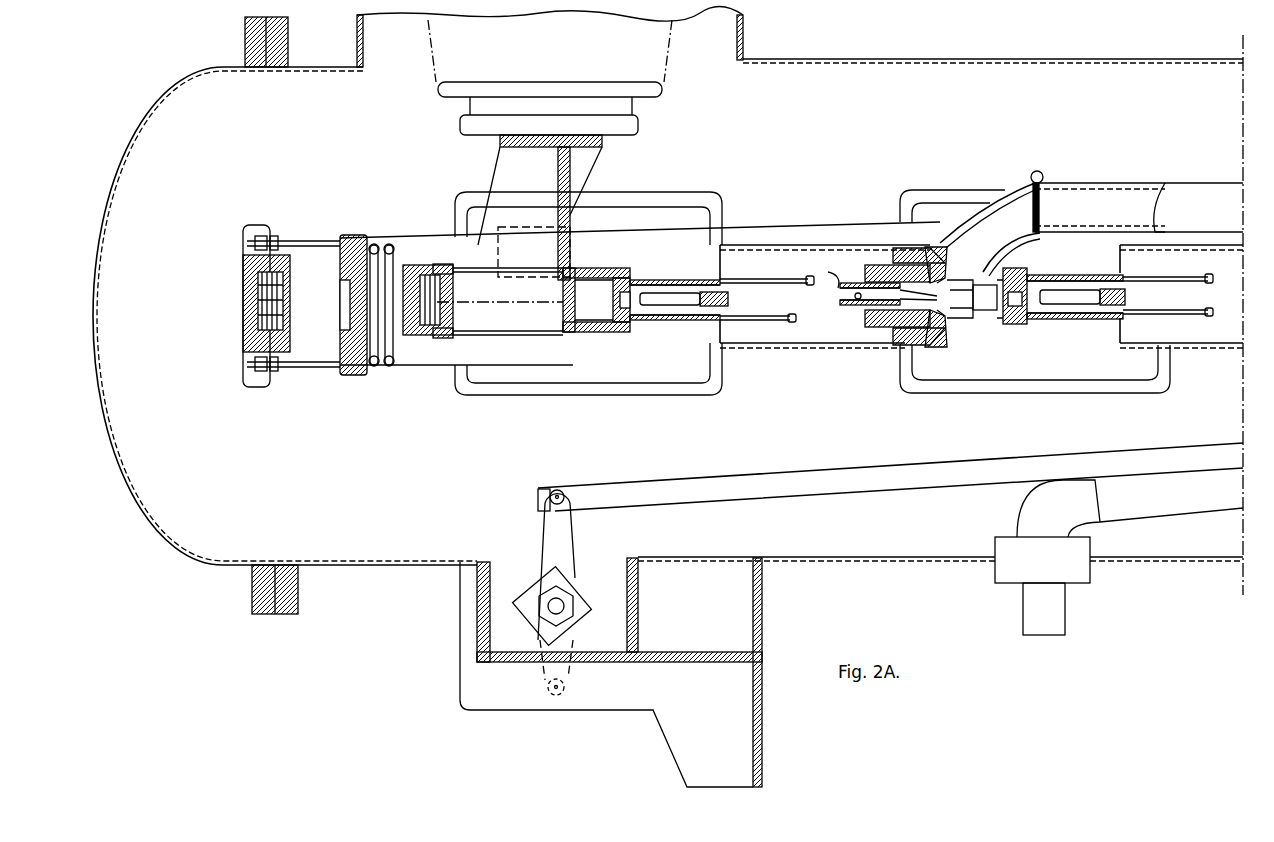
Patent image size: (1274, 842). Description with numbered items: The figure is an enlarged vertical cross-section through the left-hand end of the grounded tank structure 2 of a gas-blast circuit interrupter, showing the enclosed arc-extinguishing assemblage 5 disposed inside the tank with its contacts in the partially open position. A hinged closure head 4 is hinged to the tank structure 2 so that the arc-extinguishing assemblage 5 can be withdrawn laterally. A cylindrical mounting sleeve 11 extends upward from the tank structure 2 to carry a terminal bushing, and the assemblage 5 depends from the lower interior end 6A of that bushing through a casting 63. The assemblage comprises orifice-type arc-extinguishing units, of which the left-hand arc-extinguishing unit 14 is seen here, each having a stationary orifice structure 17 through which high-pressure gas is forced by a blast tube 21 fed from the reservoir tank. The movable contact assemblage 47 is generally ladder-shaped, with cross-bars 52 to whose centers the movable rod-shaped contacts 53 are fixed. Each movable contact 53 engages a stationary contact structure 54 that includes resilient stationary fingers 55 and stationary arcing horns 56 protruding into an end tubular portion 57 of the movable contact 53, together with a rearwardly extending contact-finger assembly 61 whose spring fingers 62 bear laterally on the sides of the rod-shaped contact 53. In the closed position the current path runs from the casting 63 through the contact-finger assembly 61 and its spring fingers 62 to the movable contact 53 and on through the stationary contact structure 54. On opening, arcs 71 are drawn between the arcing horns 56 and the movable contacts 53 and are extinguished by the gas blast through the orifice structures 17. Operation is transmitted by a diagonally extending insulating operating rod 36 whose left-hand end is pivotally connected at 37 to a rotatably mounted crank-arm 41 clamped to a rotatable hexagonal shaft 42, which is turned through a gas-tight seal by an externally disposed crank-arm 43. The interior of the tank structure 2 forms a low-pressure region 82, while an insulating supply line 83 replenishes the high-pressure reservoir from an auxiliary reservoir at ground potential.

The tank structure 2 is at (875, 563).
The hinged closure head 4 is at (182, 548).
The arc-extinguishing assemblage 5 is at (640, 197).
The lower interior end of terminal bushing 6A is at (640, 124).
The cylindrical mounting sleeve 11 is at (742, 32).
The arc-extinguishing unit 14 is at (856, 209).
The stationary orifice structure 17 is at (885, 345).
The blast tube 21 is at (1090, 188).
The insulating operating rod 36 is at (900, 464).
The pivotal connection 37 is at (565, 497).
The crank-arm 41 is at (574, 532).
The hexagonal shaft 42 is at (546, 603).
The external crank-arm 43 is at (572, 683).
The movable contact assemblage 47 is at (822, 280).
The cross-bar 52 is at (730, 298).
The movable rod-shaped contact 53 is at (1220, 324).
The stationary contact structure 54 is at (965, 273).
The resilient stationary finger 55 is at (950, 320).
The stationary arcing horn 56 is at (975, 318).
The end tubular portion 57 is at (858, 306).
The contact-finger assembly 61 is at (692, 322).
The spring finger 62 is at (790, 320).
The casting 63 is at (571, 170).
The arc 71 is at (930, 338).
The low-pressure region 82 is at (435, 461).
The insulating supply line 83 is at (1215, 513).